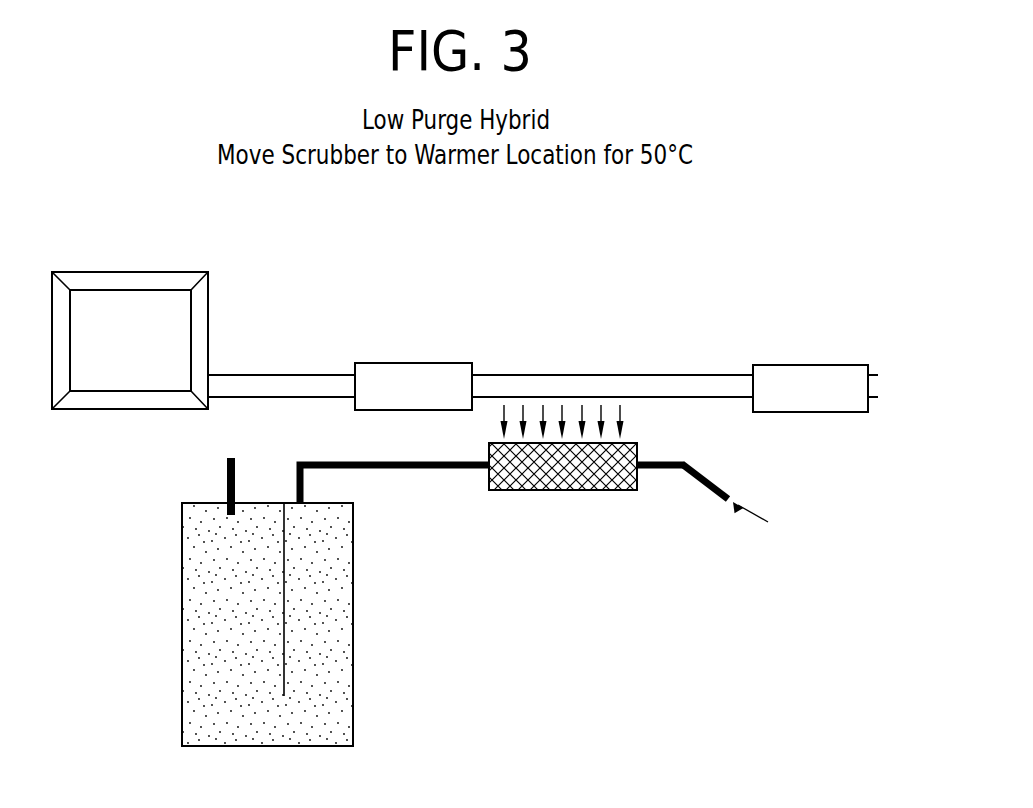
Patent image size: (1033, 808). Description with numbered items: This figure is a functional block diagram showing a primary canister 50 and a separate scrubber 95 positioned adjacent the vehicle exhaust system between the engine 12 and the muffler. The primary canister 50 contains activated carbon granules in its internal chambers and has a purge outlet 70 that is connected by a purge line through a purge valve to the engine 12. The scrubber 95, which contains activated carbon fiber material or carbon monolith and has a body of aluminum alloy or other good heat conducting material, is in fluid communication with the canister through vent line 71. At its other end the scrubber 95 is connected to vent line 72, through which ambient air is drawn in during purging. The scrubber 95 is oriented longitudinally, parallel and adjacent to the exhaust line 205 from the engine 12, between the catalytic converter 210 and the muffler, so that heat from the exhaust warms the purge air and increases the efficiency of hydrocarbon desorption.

The engine 12 is at (52, 306).
The exhaust line 205 is at (253, 374).
The catalytic converter 210 is at (420, 363).
The scrubber 95 is at (551, 492).
The vent line 71 is at (446, 472).
The vent line 72 is at (690, 464).
The purge outlet 70 is at (227, 470).
The primary canister 50 is at (172, 609).